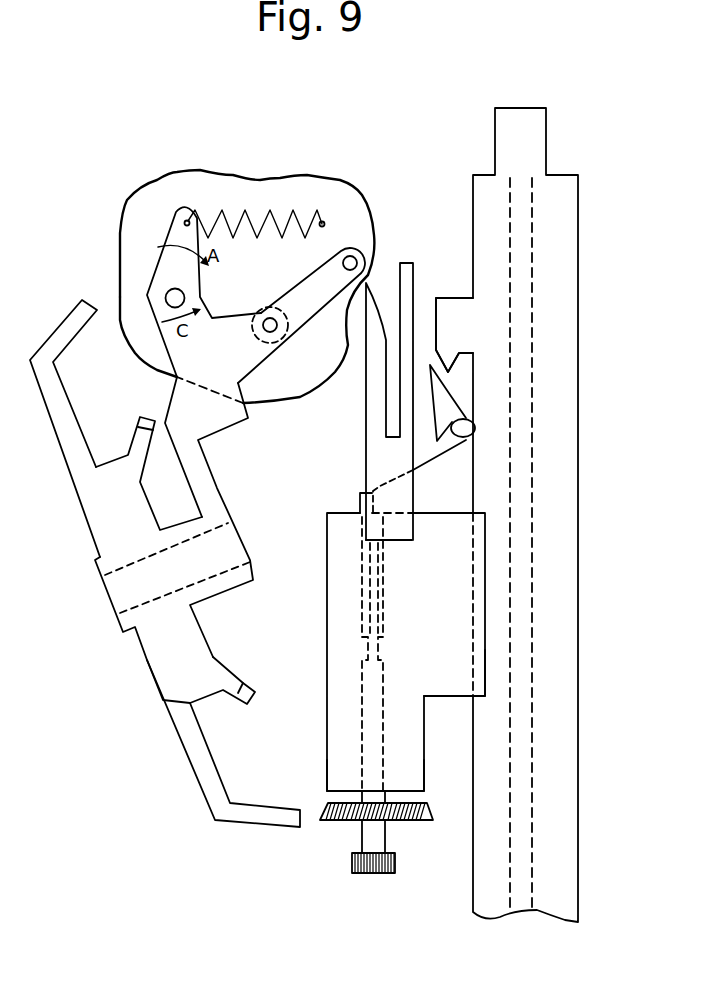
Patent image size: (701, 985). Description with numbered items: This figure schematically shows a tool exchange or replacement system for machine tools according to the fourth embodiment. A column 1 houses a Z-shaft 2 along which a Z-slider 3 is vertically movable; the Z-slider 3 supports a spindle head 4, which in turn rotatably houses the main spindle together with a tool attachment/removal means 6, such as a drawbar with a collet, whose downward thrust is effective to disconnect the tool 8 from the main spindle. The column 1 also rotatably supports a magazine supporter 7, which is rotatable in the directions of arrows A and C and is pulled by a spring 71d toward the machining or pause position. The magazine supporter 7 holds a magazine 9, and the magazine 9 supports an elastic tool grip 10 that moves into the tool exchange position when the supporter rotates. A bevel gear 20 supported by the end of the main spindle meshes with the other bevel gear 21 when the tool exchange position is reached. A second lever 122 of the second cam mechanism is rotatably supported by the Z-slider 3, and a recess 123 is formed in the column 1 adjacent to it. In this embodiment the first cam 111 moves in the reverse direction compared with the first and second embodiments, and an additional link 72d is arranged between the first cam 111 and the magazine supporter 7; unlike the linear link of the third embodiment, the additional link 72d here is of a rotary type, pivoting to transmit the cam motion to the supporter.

The column 1 is at (170, 186).
The Z-shaft 2 is at (528, 381).
The Z-slider 3 is at (454, 687).
The spindle head 4 is at (415, 774).
The tool attachment/removal means 6 is at (361, 615).
The magazine supporter 7 is at (212, 495).
The tool 8 is at (371, 876).
The magazine 9 is at (100, 530).
The elastic tool grip 10 is at (66, 330).
The bevel gear 20 is at (411, 824).
The bevel gear 21 is at (257, 699).
The spring 71d is at (274, 203).
The additional link 72d is at (318, 303).
The first cam 111 is at (367, 285).
The second lever 122 is at (433, 447).
The notch 123 is at (447, 304).